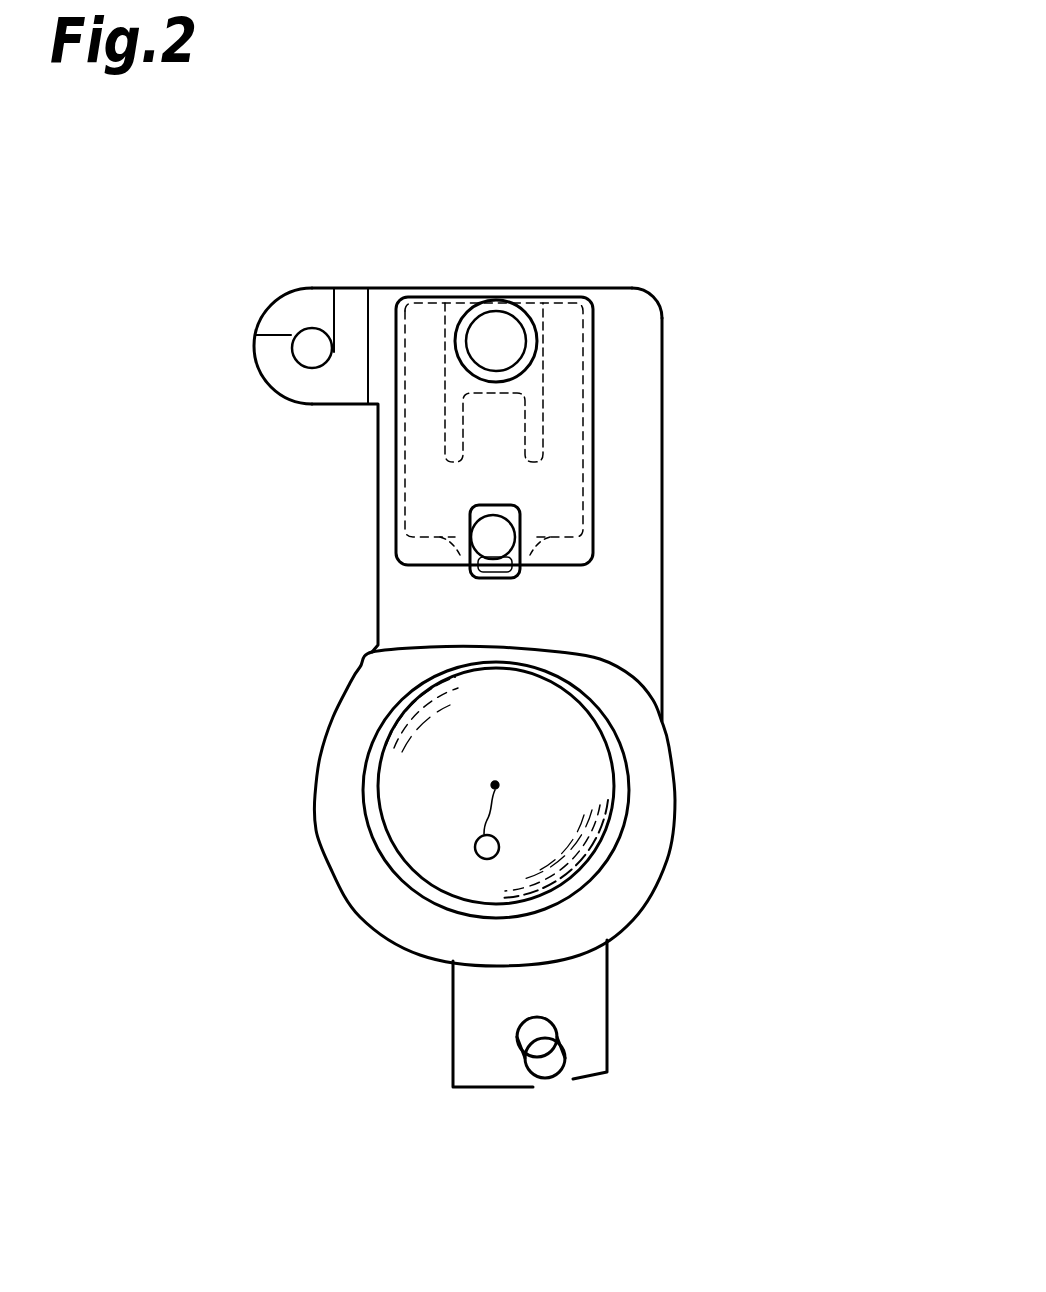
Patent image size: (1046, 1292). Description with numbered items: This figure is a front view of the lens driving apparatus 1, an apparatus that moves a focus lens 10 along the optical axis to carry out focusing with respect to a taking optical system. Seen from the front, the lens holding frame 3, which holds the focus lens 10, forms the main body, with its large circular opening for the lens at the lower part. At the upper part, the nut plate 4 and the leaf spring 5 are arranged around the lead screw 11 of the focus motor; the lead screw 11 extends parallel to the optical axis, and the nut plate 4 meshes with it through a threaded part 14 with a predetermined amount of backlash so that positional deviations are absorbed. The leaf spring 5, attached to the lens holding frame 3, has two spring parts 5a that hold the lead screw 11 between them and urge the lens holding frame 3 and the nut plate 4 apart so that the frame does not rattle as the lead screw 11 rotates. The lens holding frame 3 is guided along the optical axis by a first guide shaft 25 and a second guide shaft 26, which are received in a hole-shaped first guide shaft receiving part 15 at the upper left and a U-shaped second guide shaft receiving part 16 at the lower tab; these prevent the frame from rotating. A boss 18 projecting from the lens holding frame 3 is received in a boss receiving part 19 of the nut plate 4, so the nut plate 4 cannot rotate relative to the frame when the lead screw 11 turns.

The lens driving apparatus 1 is at (778, 394).
The lens holding frame 3 is at (640, 653).
The nut plate 4 is at (425, 550).
The leaf spring 5 is at (422, 483).
The spring parts 5a is at (420, 313).
The focus lens 10 is at (596, 800).
The lead screw 11 is at (492, 332).
The threaded part 14 is at (552, 290).
The first guide shaft receiving part 15 is at (284, 318).
The second guide shaft receiving part 16 is at (557, 1030).
The boss 18 is at (493, 552).
The boss receiving part 19 is at (520, 512).
The first guide shaft 25 is at (311, 338).
The second guide shaft 26 is at (540, 1062).